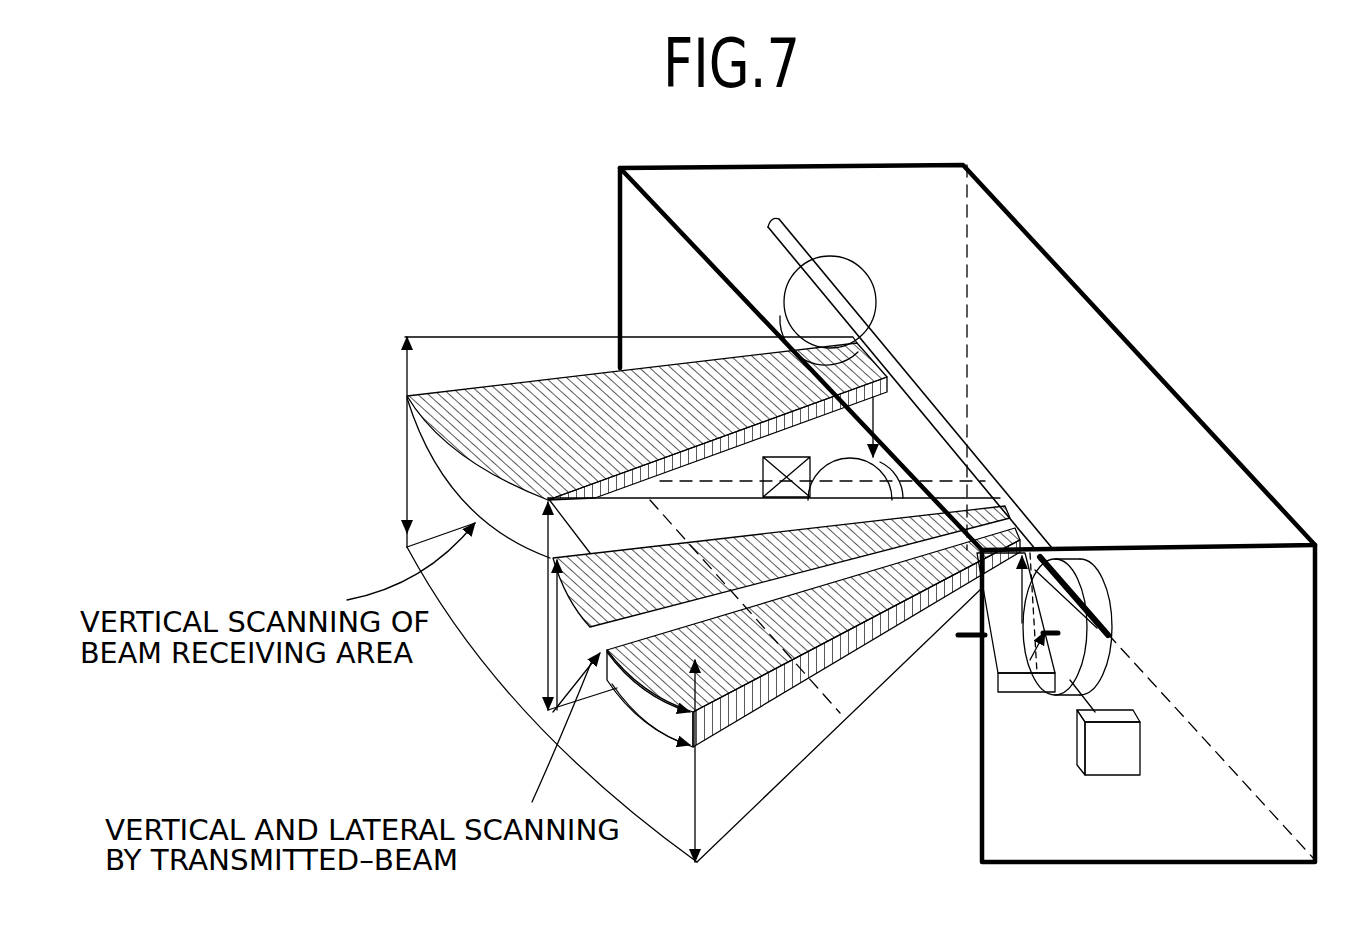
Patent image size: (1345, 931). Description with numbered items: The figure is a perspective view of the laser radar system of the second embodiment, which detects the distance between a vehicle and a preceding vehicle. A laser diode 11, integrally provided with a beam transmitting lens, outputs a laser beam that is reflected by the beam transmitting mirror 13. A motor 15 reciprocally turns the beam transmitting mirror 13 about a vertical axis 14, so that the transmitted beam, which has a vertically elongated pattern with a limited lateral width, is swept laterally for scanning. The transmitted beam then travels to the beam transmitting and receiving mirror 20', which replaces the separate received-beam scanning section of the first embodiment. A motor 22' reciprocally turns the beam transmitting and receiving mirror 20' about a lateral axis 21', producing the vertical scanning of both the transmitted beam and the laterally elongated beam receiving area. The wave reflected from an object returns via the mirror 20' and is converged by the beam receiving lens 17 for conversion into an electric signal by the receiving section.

The beam transmitting and receiving mirror 20' is at (910, 368).
The motor 22' is at (866, 301).
The beam receiving lens 17 is at (907, 447).
The lateral axis 21' is at (1122, 596).
The motor 15 is at (1097, 663).
The vertical axis 14 is at (968, 640).
The beam transmitting mirror 13 is at (1012, 688).
The laser diode 11 is at (1118, 757).